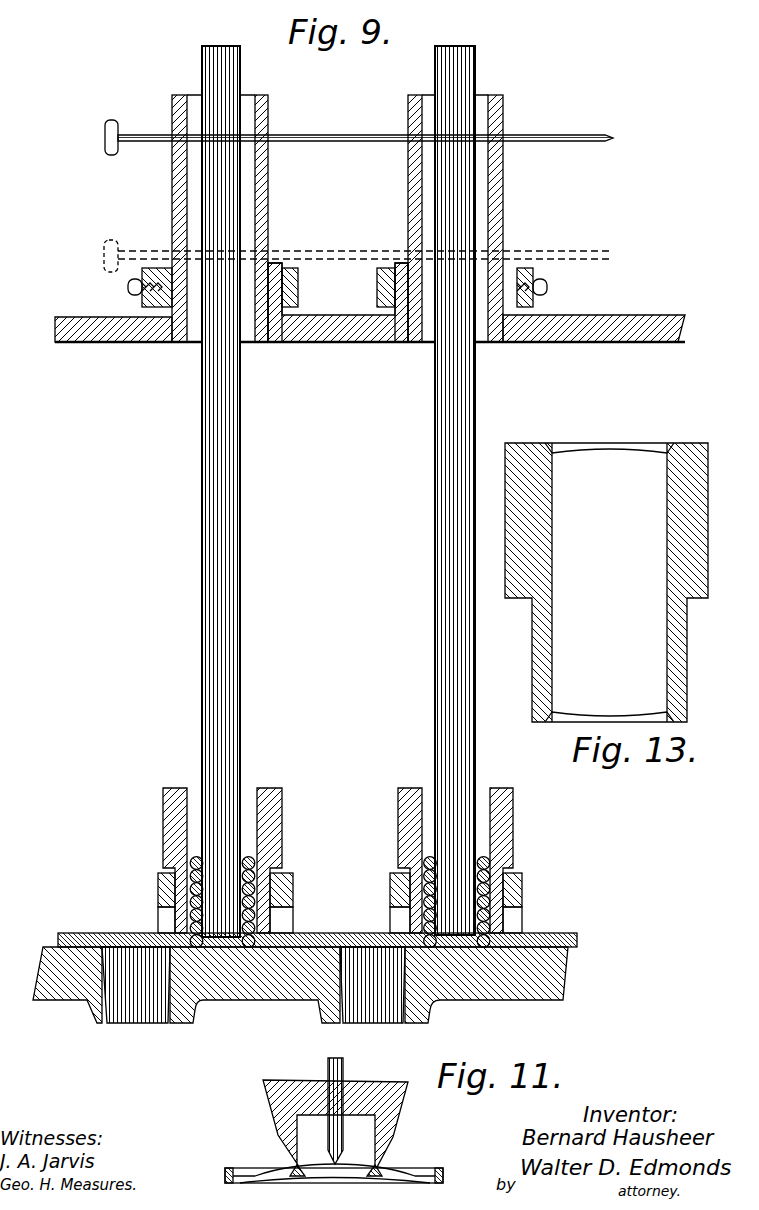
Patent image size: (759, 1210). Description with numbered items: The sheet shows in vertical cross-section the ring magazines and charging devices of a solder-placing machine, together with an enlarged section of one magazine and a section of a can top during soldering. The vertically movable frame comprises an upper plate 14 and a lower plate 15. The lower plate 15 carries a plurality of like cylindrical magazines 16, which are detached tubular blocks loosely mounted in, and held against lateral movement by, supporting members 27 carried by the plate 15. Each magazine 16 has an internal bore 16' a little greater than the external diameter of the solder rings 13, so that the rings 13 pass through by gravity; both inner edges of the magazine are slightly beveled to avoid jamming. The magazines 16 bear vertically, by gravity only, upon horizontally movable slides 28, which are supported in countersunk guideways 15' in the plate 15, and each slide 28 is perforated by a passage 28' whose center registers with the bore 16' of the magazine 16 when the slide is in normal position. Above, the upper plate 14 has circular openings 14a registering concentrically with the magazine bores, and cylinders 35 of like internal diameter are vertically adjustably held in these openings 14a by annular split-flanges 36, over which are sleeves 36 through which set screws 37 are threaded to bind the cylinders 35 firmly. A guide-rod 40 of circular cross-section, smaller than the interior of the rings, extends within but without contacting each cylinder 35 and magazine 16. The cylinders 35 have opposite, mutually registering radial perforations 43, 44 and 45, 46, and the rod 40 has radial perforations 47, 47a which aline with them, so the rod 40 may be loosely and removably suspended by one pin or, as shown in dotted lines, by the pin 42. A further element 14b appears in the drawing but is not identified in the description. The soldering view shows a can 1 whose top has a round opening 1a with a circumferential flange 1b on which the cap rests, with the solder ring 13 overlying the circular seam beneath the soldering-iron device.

In FIG. 11, the can 1 is at (228, 1176).
In FIG. 11, the round opening 1a is at (405, 1178).
In FIG. 11, the circumferential flange 1b is at (280, 1178).
In FIG. 9, the solder ring 13 is at (158, 893).
In FIG. 11, the solder ring 13 is at (380, 1165).
In FIG. 9, the upper plate 14 is at (612, 342).
In FIG. 9, the circular openings 14a is at (275, 345).
In FIG. 9, the bore 14b is at (300, 264).
In FIG. 9, the lower plate 15 is at (300, 987).
In FIG. 9, the countersunk guideways 15' is at (317, 908).
In FIG. 9, the cylindrical magazine 16 is at (338, 860).
In FIG. 13, the cylindrical magazine 16 is at (606, 565).
In FIG. 9, the internal bore 16' is at (339, 777).
In FIG. 9, the supporting members 27 is at (292, 880).
In FIG. 9, the slide 28 is at (271, 902).
In FIG. 9, the passage 28' is at (145, 1007).
In FIG. 9, the cylinder 35 is at (172, 193).
In FIG. 9, the annular split-flange 36 is at (298, 285).
In FIG. 9, the set screw 37 is at (130, 291).
In FIG. 9, the guide-rod 40 is at (222, 455).
In FIG. 13, the guide-rod 40 is at (489, 448).
In FIG. 9, the pin 42 is at (595, 260).
In FIG. 9, the perforation 43 is at (172, 123).
In FIG. 9, the perforation 44 is at (268, 122).
In FIG. 9, the perforation 45 is at (175, 250).
In FIG. 9, the perforation 46 is at (270, 245).
In FIG. 9, the perforation 47 is at (360, 135).
In FIG. 9, the perforation 47a is at (462, 246).